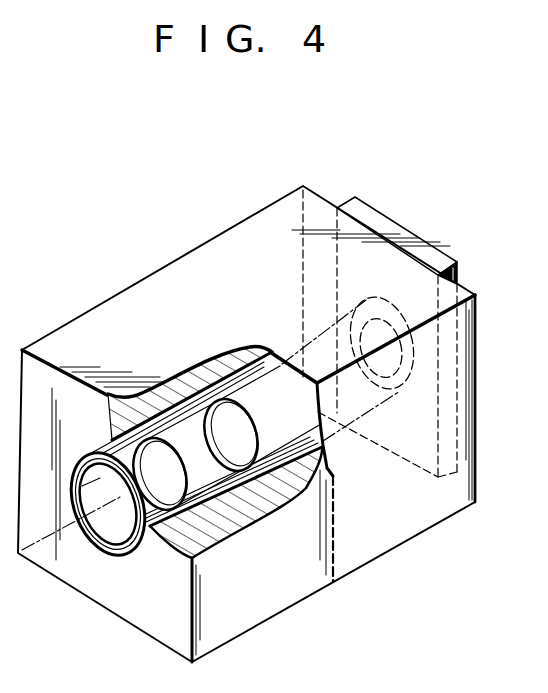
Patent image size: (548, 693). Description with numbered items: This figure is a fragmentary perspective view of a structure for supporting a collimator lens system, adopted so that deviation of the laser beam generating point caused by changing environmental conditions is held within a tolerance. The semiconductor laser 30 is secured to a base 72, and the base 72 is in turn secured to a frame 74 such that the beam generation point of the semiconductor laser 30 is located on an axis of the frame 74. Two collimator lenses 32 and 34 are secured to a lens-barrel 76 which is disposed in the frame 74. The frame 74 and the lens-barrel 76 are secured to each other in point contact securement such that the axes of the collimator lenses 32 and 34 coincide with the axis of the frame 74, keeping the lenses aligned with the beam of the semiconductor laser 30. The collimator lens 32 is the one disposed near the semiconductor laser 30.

The frame 74 is at (186, 260).
The base 72 is at (408, 238).
The semiconductor laser 30 is at (379, 327).
The collimator lens 32 is at (236, 419).
The collimator lens 34 is at (173, 480).
The lens-barrel 76 is at (128, 547).